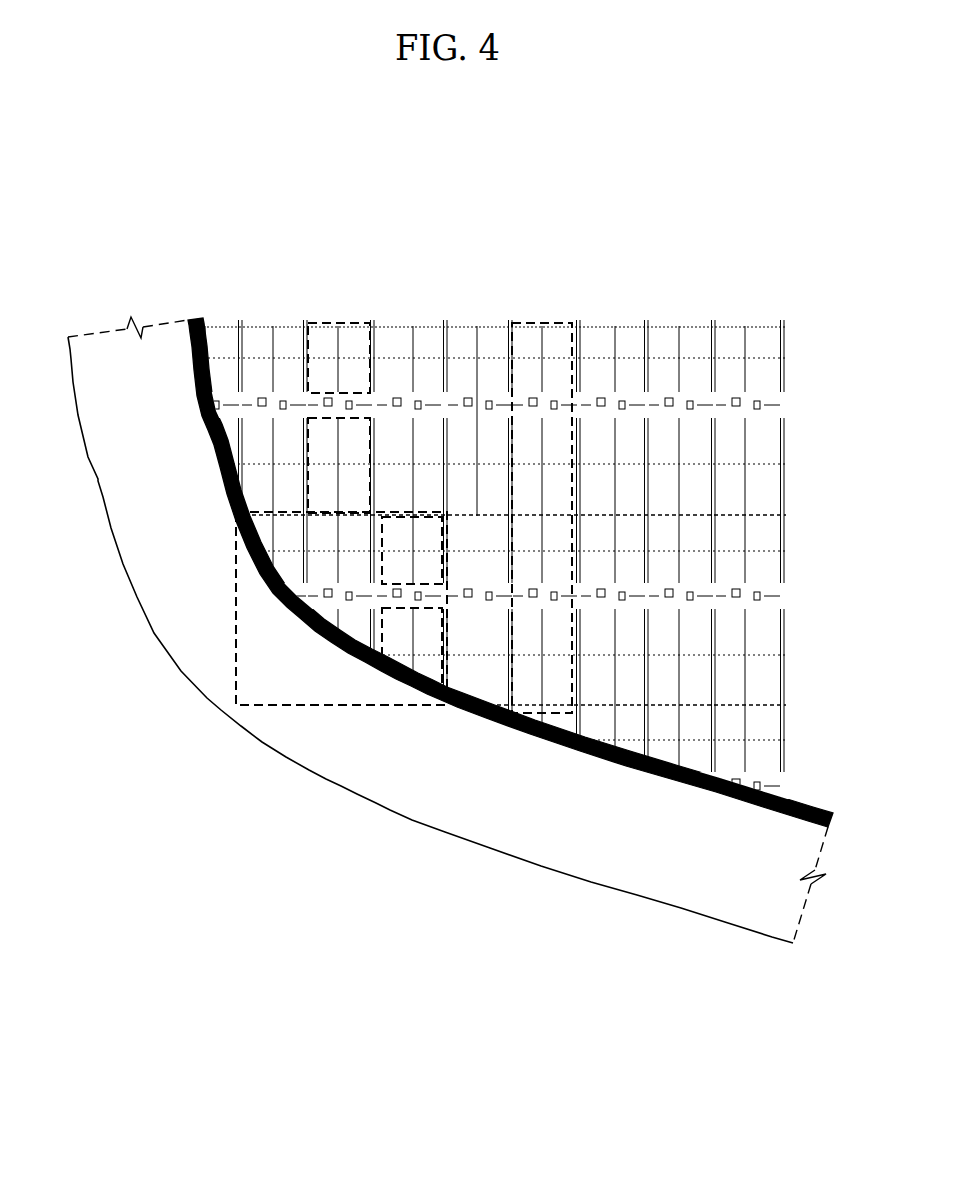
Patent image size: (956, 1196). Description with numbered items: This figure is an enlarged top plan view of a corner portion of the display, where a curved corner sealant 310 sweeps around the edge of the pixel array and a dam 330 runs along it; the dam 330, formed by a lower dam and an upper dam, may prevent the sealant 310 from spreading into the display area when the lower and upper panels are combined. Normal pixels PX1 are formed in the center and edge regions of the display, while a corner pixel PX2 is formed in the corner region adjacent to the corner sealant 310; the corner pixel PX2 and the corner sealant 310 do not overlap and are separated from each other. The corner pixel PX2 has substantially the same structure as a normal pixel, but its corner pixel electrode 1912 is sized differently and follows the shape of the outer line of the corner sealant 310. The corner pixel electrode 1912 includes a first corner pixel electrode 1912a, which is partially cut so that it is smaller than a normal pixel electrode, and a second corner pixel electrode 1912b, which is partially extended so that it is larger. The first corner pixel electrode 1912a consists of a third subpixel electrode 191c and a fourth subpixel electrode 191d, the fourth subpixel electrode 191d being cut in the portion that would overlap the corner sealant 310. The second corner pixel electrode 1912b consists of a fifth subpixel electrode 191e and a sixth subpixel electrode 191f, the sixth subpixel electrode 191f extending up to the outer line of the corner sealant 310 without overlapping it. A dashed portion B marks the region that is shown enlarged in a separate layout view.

The corner sealant 310 is at (580, 848).
The dam 330 is at (697, 782).
The portion B is at (422, 710).
The normal pixel PX1 is at (535, 323).
The corner pixel PX2 is at (510, 537).
The corner pixel electrode 1912 is at (269, 660).
The first corner pixel electrode 1912a is at (351, 734).
The second corner pixel electrode 1912b is at (233, 637).
The third subpixel electrode 191c is at (382, 550).
The fourth subpixel electrode 191d is at (382, 640).
The fifth subpixel electrode 191e is at (307, 360).
The sixth subpixel electrode 191f is at (307, 472).